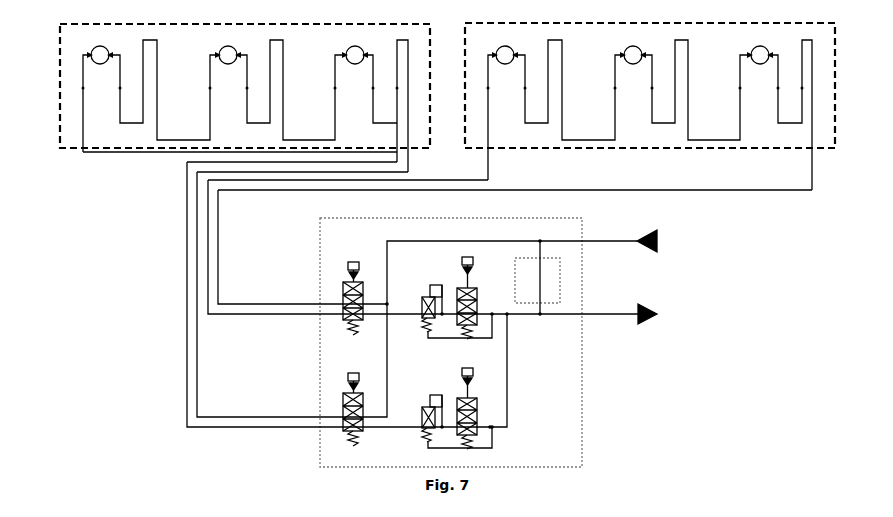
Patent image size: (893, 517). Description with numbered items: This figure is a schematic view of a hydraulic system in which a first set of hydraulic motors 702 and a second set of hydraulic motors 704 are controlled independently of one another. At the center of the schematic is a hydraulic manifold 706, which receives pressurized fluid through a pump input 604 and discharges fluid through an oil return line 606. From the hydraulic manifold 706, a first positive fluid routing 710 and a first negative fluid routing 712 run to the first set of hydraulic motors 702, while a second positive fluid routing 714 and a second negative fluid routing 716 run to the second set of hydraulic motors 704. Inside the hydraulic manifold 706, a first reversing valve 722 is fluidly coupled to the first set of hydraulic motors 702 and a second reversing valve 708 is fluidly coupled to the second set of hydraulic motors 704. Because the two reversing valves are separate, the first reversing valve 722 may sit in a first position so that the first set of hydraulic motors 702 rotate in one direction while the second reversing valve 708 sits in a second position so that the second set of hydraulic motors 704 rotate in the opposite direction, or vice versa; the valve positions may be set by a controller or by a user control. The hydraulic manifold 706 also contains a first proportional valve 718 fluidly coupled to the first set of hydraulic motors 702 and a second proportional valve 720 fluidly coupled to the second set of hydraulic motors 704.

The pump input 604 is at (657, 241).
The oil return line 606 is at (657, 314).
The first set of hydraulic motors 702 is at (62, 148).
The second set of hydraulic motors 704 is at (833, 107).
The hydraulic manifold 706 is at (582, 368).
The second reversing valve 708 is at (335, 267).
The first positive fluid routing 710 is at (237, 417).
The first negative fluid routing 712 is at (218, 428).
The second positive fluid routing 714 is at (270, 305).
The second negative fluid routing 716 is at (278, 316).
The first proportional valve 718 is at (496, 397).
The second proportional valve 720 is at (486, 265).
The first reversing valve 722 is at (346, 458).